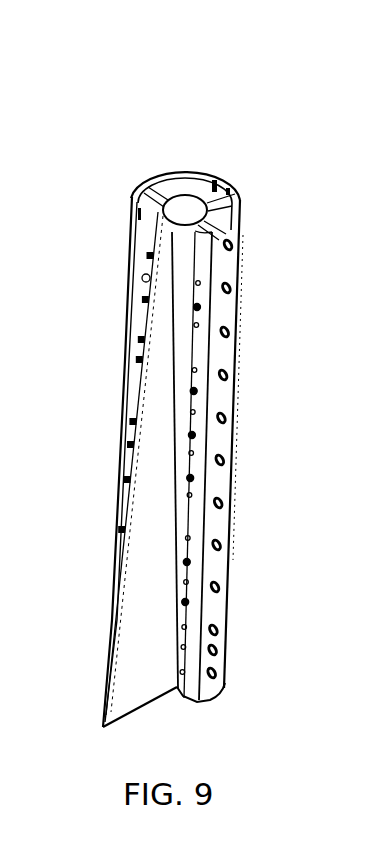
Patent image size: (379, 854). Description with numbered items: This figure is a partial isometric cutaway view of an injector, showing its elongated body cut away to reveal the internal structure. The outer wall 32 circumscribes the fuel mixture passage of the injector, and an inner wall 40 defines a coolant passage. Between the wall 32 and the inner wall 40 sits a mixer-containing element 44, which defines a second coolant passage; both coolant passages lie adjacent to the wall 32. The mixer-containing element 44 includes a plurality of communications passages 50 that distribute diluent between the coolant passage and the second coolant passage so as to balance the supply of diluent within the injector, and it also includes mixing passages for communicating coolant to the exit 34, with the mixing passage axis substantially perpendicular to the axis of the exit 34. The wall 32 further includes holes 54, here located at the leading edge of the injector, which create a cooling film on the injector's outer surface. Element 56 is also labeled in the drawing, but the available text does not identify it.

The wall 32 is at (217, 484).
The exit 34 is at (238, 283).
The inner wall 40 is at (240, 197).
The mixer-containing element 44 is at (152, 195).
The communications passage 50 is at (197, 392).
The holes 54 is at (207, 172).
The panel 56 is at (143, 643).